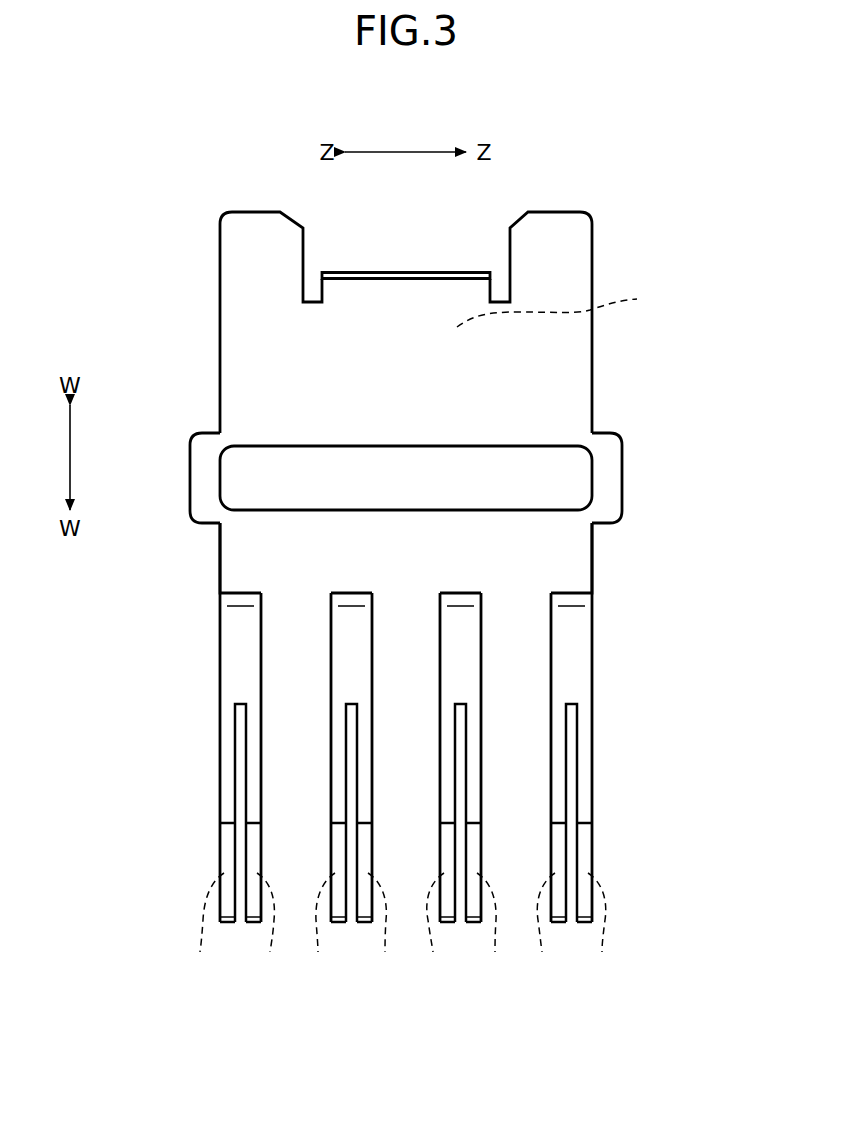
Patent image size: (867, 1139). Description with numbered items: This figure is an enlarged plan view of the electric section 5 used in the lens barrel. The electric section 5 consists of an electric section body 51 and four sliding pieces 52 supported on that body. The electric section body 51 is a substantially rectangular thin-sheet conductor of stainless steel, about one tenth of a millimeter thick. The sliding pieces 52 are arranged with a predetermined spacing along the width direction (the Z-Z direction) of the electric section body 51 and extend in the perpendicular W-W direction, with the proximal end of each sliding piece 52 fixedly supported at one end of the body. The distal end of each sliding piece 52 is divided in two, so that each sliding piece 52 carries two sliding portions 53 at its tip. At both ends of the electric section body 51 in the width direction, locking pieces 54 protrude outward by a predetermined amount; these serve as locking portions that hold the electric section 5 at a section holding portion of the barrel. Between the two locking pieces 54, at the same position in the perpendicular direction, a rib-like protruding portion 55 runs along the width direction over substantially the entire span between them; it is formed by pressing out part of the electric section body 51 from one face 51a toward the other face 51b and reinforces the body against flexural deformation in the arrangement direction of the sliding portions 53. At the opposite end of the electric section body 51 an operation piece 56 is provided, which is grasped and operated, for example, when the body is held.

The electric section 5 is at (459, 376).
The electric section body 51 is at (452, 402).
The one face 51a is at (452, 322).
The other face 51b is at (500, 398).
The sliding piece 52 is at (240, 655).
The sliding portion 53 is at (401, 842).
The locking piece 54 is at (200, 476).
The rib-like protruding portion 55 is at (487, 492).
The operation piece 56 is at (398, 268).